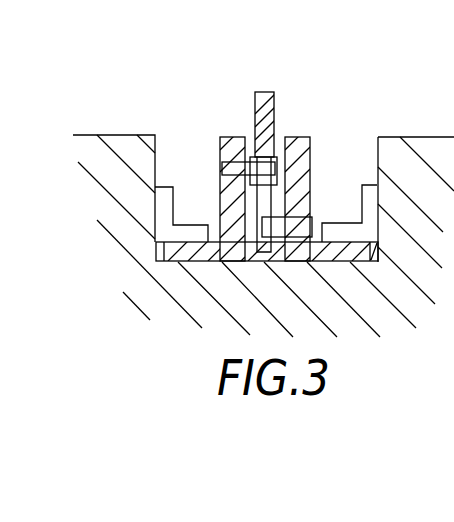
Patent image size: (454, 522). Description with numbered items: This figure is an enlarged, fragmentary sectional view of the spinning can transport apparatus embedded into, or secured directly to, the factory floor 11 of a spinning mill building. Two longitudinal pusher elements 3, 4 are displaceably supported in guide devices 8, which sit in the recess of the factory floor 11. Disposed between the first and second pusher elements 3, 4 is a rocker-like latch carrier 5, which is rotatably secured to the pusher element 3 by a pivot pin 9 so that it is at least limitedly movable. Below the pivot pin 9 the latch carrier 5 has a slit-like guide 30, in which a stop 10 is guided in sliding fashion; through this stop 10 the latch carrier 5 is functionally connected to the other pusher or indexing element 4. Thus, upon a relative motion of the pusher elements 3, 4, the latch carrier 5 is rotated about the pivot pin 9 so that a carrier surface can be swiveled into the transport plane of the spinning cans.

The pusher element 3 is at (222, 137).
The pusher element 4 is at (303, 137).
The latch carrier 5 is at (275, 92).
The guide device 8 is at (338, 228).
The pivot pin 9 is at (223, 170).
The stop 10 is at (322, 222).
The factory floor 11 is at (410, 137).
The slit-like guide 30 is at (223, 200).